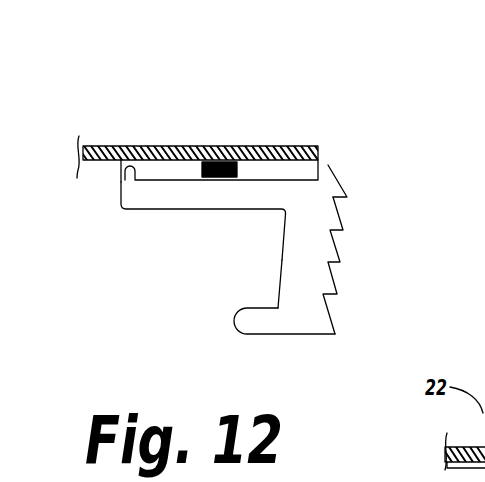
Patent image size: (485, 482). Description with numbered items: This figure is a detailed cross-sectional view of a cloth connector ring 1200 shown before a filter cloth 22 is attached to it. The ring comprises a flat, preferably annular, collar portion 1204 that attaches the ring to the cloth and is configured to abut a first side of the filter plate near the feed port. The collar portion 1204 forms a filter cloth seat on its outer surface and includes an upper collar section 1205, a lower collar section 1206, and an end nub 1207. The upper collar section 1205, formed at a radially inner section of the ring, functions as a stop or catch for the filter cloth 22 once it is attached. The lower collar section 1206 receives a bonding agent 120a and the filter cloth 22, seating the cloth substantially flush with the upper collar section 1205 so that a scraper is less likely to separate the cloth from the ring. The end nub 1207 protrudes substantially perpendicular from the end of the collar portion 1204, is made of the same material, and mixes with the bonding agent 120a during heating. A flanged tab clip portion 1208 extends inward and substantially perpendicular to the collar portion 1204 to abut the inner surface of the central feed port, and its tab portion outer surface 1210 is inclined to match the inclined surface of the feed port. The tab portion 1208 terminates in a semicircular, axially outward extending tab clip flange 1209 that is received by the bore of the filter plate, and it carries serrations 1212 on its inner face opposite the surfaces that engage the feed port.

The cloth connector ring 1200 is at (243, 119).
The filter cloth 22 is at (122, 146).
The bonding agent 120a is at (202, 168).
The upper collar section 1205 is at (330, 172).
The lower collar section 1206 is at (222, 205).
The end nub 1207 is at (125, 173).
The collar portion 1204 is at (137, 193).
The tab portion outer surface 1210 is at (288, 222).
The flanged tab clip portion 1208 is at (298, 263).
The tab clip flange 1209 is at (245, 318).
The serrations 1212 is at (343, 230).